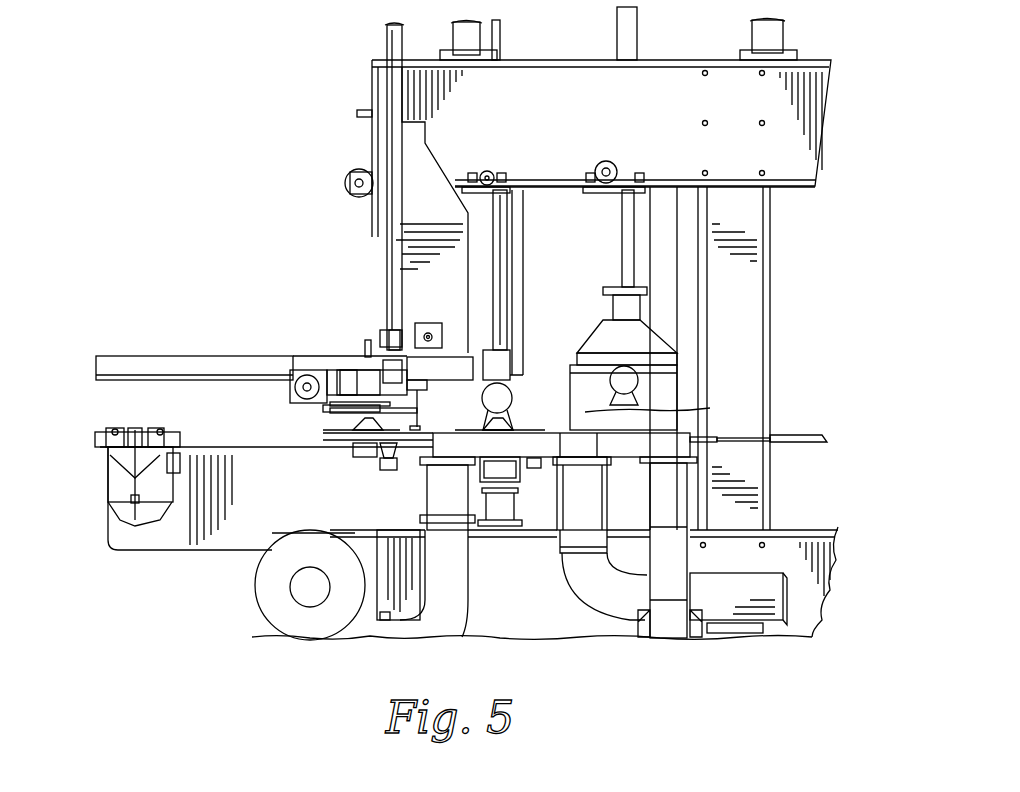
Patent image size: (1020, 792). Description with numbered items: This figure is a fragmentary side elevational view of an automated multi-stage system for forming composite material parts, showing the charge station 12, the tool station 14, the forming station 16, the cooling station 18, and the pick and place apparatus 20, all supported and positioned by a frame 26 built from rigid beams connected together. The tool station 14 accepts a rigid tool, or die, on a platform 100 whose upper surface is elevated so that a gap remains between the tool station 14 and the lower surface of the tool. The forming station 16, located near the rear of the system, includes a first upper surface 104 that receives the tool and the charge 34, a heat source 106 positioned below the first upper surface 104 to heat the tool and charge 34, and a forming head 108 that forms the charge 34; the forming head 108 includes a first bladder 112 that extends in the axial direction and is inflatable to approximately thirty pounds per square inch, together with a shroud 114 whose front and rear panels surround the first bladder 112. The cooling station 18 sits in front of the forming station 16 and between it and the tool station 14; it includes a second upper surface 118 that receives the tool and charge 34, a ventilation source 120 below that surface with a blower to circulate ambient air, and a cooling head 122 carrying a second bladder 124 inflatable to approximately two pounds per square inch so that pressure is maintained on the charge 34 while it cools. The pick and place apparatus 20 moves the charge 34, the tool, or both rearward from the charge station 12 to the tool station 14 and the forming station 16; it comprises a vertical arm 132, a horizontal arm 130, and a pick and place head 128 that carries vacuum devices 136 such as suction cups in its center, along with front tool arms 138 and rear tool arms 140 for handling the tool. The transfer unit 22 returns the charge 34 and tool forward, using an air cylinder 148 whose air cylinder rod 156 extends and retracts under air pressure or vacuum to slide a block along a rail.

The charge station 12 is at (66, 399).
The tool station 14 is at (330, 465).
The forming station 16 is at (603, 262).
The cooling station 18 is at (538, 293).
The pick and place apparatus 20 is at (284, 294).
The transfer unit 22 is at (833, 410).
The frame 26 is at (805, 231).
The charge 34 is at (345, 368).
The platform 100 is at (323, 433).
The first upper surface 104 is at (598, 437).
The heat source 106 is at (700, 659).
The forming head 108 is at (588, 330).
The first bladder 112 is at (633, 393).
The shroud 114 is at (668, 410).
The second upper surface 118 is at (527, 433).
The ventilation source 120 is at (228, 640).
The cooling head 122 is at (480, 330).
The second bladder 124 is at (517, 412).
The pick and place head 128 is at (344, 345).
The horizontal arm 130 is at (135, 365).
The vertical arm 132 is at (390, 258).
The vacuum devices 136 is at (373, 397).
The front tool arms 138 is at (313, 418).
The rear tool arms 140 is at (427, 422).
The air cylinder 148 is at (810, 440).
The air cylinder rod 156 is at (745, 435).